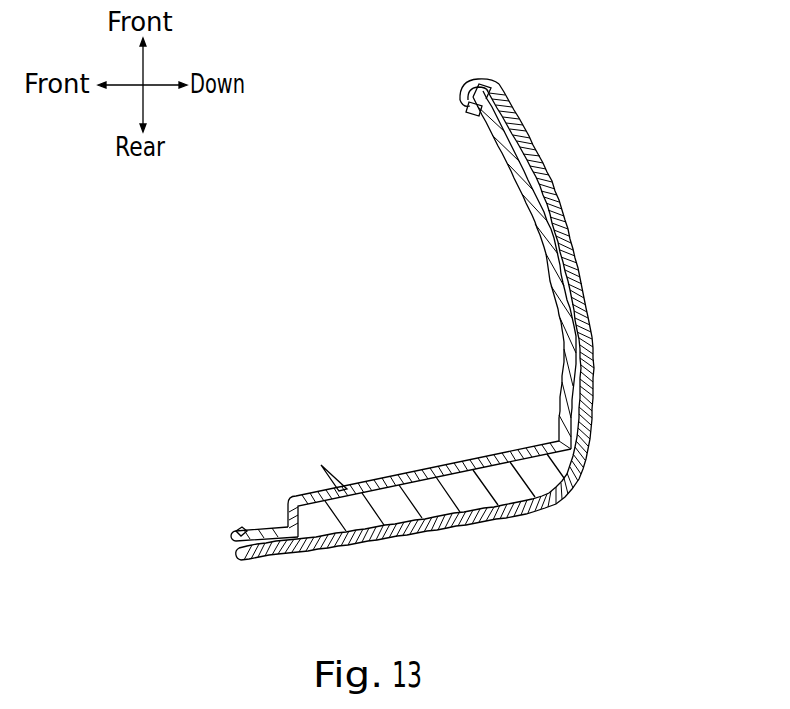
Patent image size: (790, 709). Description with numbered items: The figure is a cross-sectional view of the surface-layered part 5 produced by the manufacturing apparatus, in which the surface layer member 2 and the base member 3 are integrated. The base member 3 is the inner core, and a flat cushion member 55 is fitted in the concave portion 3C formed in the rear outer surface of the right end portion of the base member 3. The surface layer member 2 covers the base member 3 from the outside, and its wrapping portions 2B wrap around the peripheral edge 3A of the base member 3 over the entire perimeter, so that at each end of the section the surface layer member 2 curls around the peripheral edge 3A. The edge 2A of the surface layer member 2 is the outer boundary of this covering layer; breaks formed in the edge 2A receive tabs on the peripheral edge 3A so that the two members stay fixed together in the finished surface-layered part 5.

The surface layer member 2 is at (564, 209).
The edge of the surface layer member 2A is at (461, 80).
The wrapping portions 2B is at (470, 110).
The base member 3 is at (540, 241).
The peripheral edge of the base member 3A is at (487, 84).
The concave portion 3C is at (418, 488).
The surface-layered part 5 is at (344, 291).
The cushion member 55 is at (460, 496).